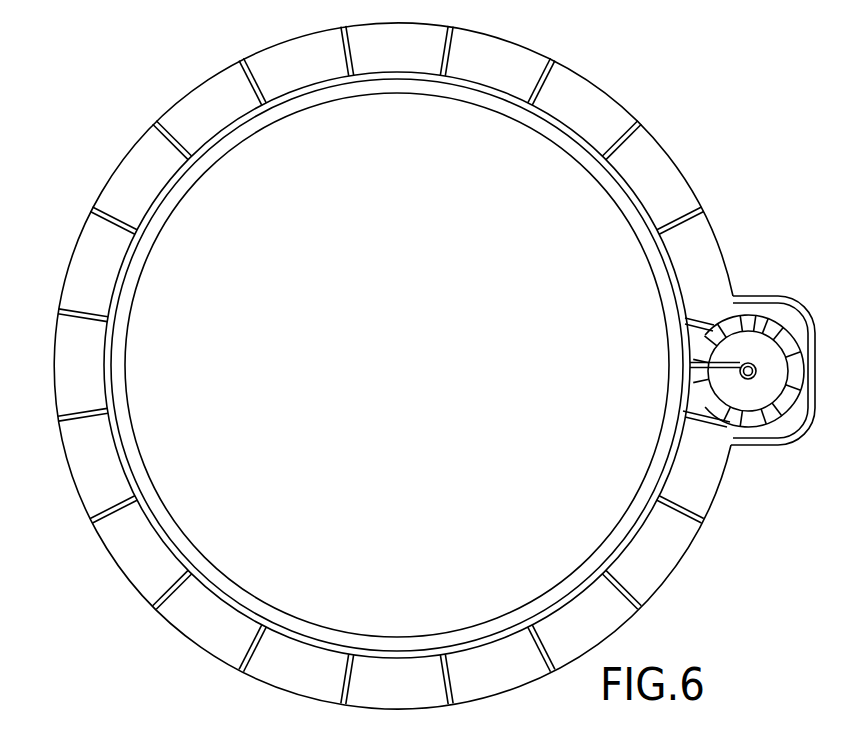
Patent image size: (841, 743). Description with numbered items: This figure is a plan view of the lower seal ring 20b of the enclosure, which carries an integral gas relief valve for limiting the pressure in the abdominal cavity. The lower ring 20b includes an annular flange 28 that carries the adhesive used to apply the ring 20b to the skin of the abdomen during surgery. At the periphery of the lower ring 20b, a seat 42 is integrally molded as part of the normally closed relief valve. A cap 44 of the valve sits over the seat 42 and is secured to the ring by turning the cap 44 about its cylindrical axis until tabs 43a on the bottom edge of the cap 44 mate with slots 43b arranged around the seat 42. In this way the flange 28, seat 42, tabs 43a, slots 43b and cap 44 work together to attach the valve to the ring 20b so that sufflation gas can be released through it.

The lower ring 20b is at (49, 394).
The annular flange 28 is at (697, 247).
The seat 42 is at (772, 427).
The tabs 43a is at (753, 318).
The slots 43b is at (768, 328).
The cap 44 is at (770, 352).